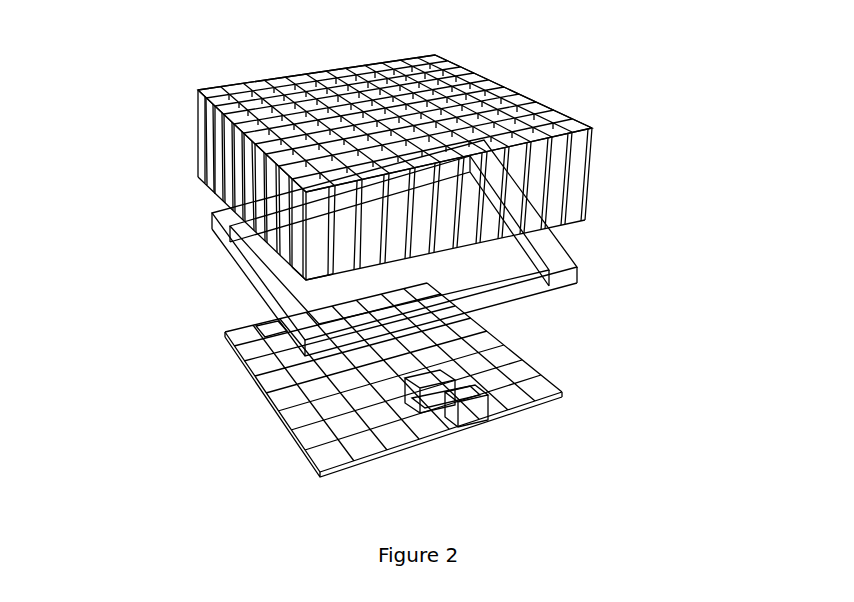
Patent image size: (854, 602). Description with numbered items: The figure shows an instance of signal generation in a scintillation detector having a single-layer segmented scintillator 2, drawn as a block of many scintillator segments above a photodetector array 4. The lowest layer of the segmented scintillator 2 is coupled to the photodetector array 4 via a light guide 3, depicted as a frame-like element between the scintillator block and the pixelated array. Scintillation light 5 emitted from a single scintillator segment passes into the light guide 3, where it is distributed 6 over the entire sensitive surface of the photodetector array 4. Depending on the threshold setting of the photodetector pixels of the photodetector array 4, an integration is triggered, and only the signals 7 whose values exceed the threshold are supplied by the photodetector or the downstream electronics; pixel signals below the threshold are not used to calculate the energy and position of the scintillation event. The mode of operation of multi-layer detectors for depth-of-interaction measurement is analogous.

The segmented scintillator 2 is at (578, 144).
The light guide 3 is at (212, 222).
The photodetector array 4 is at (562, 392).
The scintillation light 5 is at (300, 252).
The distribution of the scintillation light 6 is at (262, 345).
The signals above threshold 7 is at (430, 425).